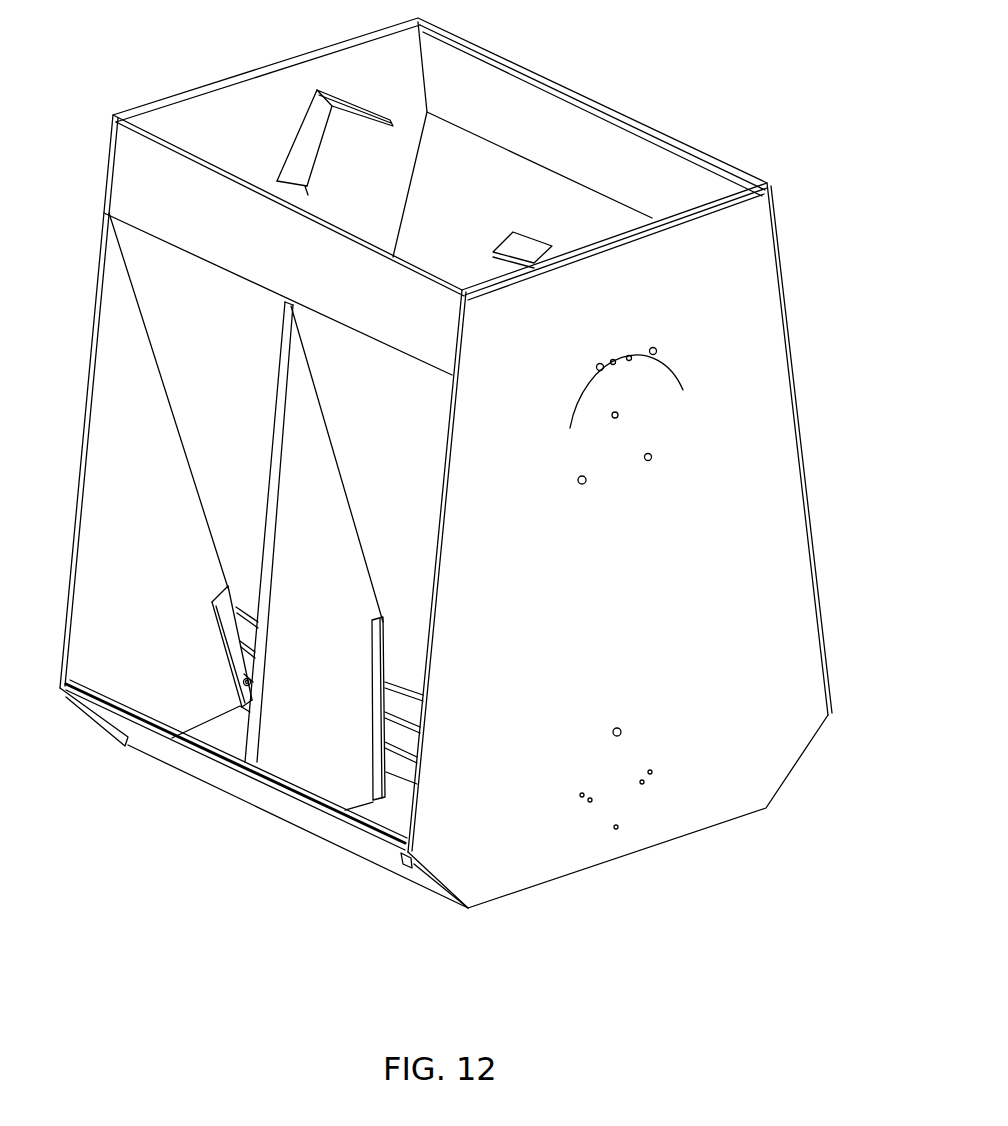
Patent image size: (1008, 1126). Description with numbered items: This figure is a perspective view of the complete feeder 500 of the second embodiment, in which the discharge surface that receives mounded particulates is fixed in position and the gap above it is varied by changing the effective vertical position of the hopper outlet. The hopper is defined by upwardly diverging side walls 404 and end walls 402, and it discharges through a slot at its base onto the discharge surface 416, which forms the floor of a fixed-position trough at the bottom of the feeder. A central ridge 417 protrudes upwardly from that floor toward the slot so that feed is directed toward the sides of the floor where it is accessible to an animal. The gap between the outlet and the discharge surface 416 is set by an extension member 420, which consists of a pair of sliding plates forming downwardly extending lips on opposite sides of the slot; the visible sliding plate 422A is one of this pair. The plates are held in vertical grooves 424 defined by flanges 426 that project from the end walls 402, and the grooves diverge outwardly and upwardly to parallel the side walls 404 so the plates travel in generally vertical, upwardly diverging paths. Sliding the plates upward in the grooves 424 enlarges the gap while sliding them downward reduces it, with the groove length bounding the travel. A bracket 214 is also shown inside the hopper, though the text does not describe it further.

The feeder 500 is at (807, 322).
The mounting bracket 214 is at (300, 150).
The side wall 404 is at (238, 418).
The end wall 402 is at (136, 644).
The vertical groove 424 is at (214, 600).
The flange 426 is at (215, 628).
The extension member 420 is at (248, 600).
The discharge surface 416 is at (222, 733).
The sliding plate 422A is at (400, 706).
The central ridge 417 is at (400, 773).